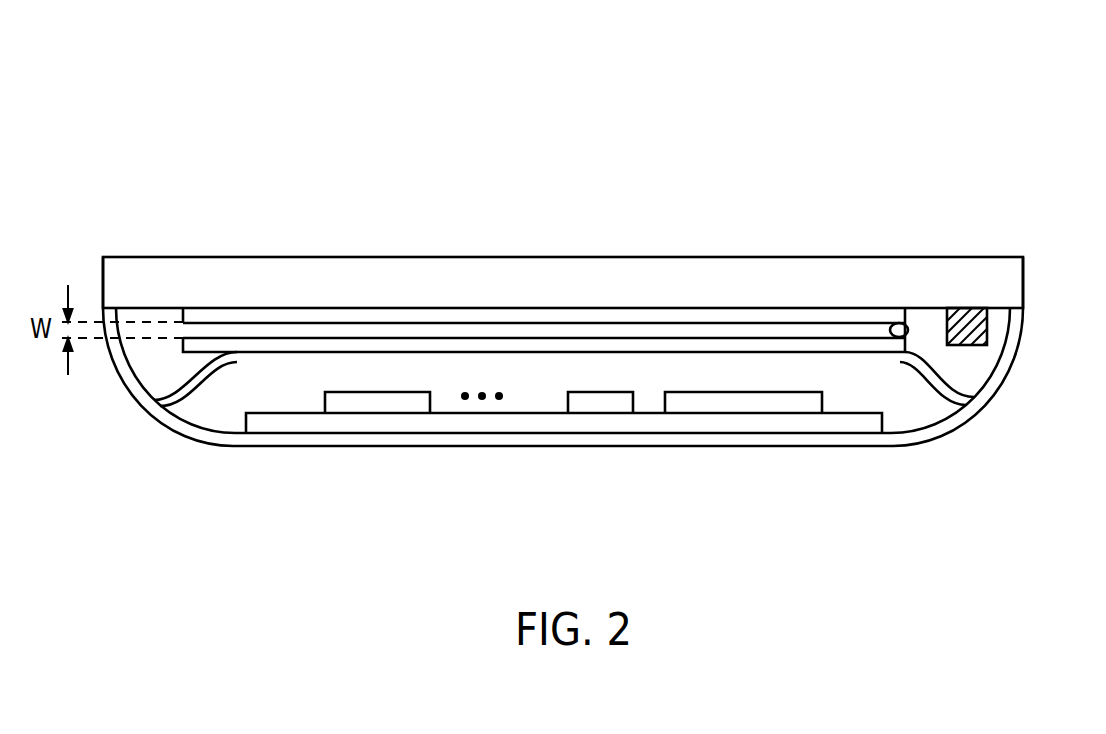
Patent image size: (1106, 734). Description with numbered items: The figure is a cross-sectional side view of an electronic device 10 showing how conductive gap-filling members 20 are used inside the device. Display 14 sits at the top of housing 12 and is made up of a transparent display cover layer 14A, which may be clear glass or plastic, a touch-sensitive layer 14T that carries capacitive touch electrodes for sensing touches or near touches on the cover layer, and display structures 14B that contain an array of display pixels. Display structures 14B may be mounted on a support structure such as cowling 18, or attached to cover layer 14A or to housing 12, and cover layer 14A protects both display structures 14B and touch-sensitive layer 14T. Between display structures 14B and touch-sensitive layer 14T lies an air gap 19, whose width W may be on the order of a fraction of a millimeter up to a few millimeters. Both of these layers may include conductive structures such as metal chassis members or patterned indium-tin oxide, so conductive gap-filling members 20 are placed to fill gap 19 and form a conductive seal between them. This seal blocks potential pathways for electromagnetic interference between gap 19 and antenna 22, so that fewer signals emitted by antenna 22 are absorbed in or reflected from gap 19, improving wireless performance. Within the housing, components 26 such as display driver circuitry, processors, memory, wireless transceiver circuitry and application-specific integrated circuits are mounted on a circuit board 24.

The electronic device 10 is at (760, 75).
The housing 12 is at (833, 440).
The display 14 is at (563, 269).
The display cover layer 14A is at (439, 267).
The touch-sensitive layer 14T is at (611, 315).
The display structures 14B is at (545, 345).
The cowling 18 is at (957, 400).
The gap 19 is at (175, 330).
The conductive gap-filling members 20 is at (913, 328).
The antenna 22 is at (983, 332).
The printed circuit board 24 is at (472, 423).
The components 26 is at (373, 407).